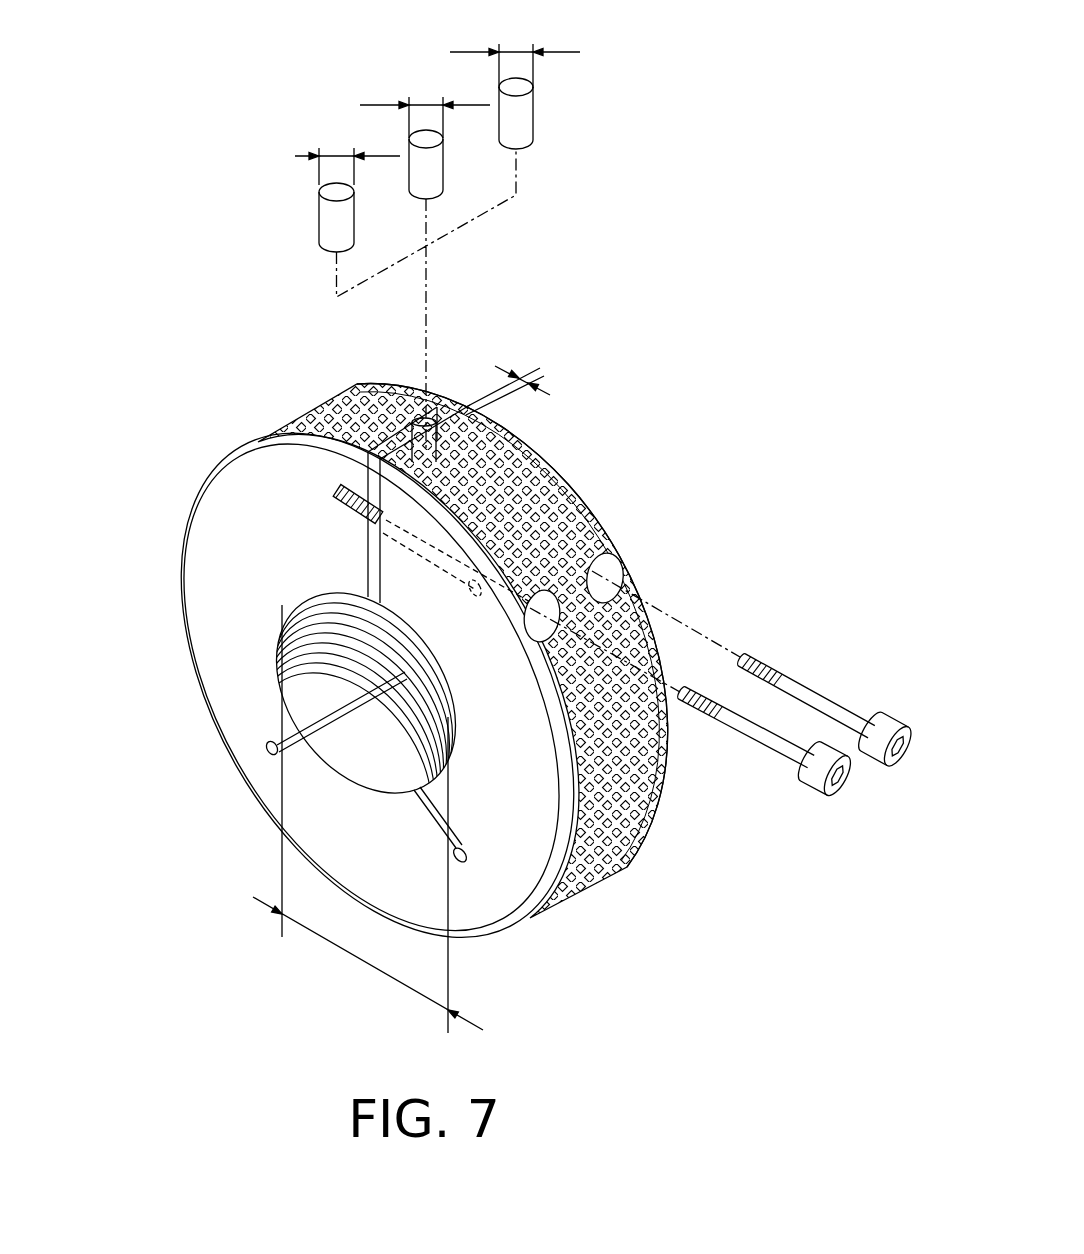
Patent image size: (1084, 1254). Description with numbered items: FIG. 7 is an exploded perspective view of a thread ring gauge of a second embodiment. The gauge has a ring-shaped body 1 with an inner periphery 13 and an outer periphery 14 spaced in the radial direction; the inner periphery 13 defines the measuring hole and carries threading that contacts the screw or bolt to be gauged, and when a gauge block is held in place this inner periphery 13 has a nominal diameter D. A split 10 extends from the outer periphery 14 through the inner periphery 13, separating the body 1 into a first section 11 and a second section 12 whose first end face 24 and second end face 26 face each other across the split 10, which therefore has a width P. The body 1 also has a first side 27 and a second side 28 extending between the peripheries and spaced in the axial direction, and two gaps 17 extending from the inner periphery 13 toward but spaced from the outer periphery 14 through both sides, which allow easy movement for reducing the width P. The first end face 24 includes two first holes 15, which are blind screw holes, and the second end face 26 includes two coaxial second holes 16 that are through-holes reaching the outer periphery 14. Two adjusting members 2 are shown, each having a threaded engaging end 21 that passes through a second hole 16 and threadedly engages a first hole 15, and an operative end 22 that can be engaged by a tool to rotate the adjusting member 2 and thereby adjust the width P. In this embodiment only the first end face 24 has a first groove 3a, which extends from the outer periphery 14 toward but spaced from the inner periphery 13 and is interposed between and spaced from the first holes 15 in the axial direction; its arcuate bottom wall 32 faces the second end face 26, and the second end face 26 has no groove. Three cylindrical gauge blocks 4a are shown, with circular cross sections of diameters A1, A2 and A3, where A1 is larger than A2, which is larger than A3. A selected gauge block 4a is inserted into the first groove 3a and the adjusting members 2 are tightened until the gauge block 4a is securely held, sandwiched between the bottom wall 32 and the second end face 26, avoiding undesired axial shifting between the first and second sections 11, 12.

The body 1 is at (408, 654).
The adjusting member 2 is at (804, 732).
The first groove 3a is at (384, 380).
The gauge block 4a is at (323, 222).
The split 10 is at (368, 570).
The first section 11 is at (234, 511).
The second section 12 is at (527, 780).
The inner periphery 13 is at (365, 757).
The outer periphery 14 is at (613, 857).
The first hole 15 is at (362, 422).
The second hole 16 is at (578, 500).
The gap 17 is at (265, 745).
The threaded engaging end 21 is at (777, 657).
The operative end 22 is at (896, 722).
The first end face 24 is at (362, 542).
The second end face 26 is at (360, 570).
The first side 27 is at (245, 752).
The second side 28 is at (557, 477).
The bottom wall 32 is at (440, 420).
The diameter of first gauge block A1 is at (347, 149).
The diameter of second gauge block A2 is at (425, 101).
The diameter of third gauge block A3 is at (515, 49).
The width of the split P is at (508, 377).
The nominal diameter D is at (368, 819).